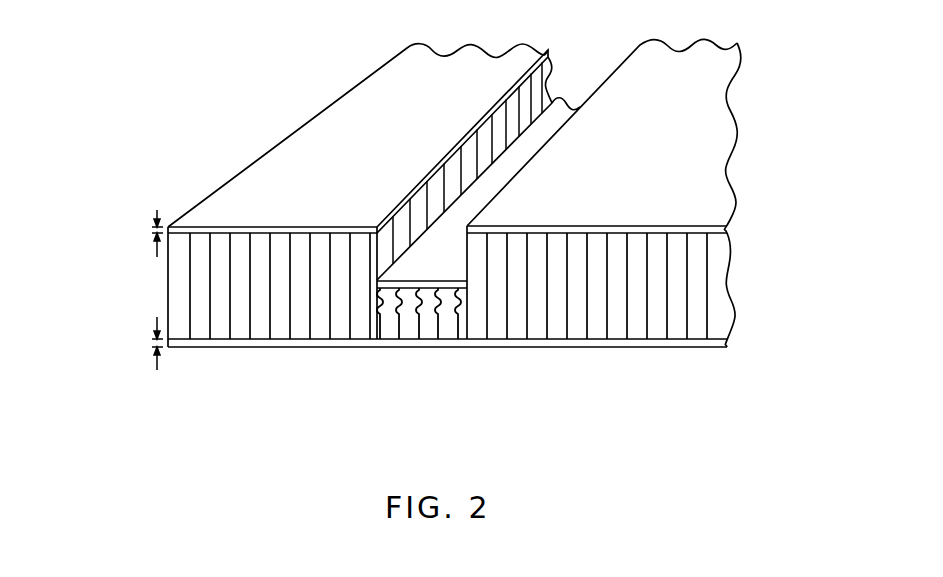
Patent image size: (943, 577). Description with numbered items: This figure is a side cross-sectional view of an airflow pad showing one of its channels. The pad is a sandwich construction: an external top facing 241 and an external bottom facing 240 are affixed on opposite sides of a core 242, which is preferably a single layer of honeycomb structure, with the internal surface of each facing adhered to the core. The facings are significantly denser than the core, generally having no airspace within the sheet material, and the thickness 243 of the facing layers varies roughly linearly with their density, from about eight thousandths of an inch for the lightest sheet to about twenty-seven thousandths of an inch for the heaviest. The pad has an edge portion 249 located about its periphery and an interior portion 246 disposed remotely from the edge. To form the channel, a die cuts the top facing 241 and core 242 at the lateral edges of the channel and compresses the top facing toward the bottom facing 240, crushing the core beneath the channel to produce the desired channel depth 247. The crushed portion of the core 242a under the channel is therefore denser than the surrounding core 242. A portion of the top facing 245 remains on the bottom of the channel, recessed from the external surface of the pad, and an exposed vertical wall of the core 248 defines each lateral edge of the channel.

The external bottom facing 240 is at (687, 343).
The external top facing 241 is at (713, 223).
The core 242 is at (693, 280).
The portion of the core under the channels 242a is at (425, 327).
The thickness of the facing layers 243 is at (153, 230).
The portion of the top facing remaining on the bottom of the channel 245 is at (470, 281).
The interior portion 246 is at (700, 140).
The channel depth 247 is at (563, 116).
The exposed vertical wall of the core 248 is at (512, 113).
The edge portion 249 is at (170, 288).